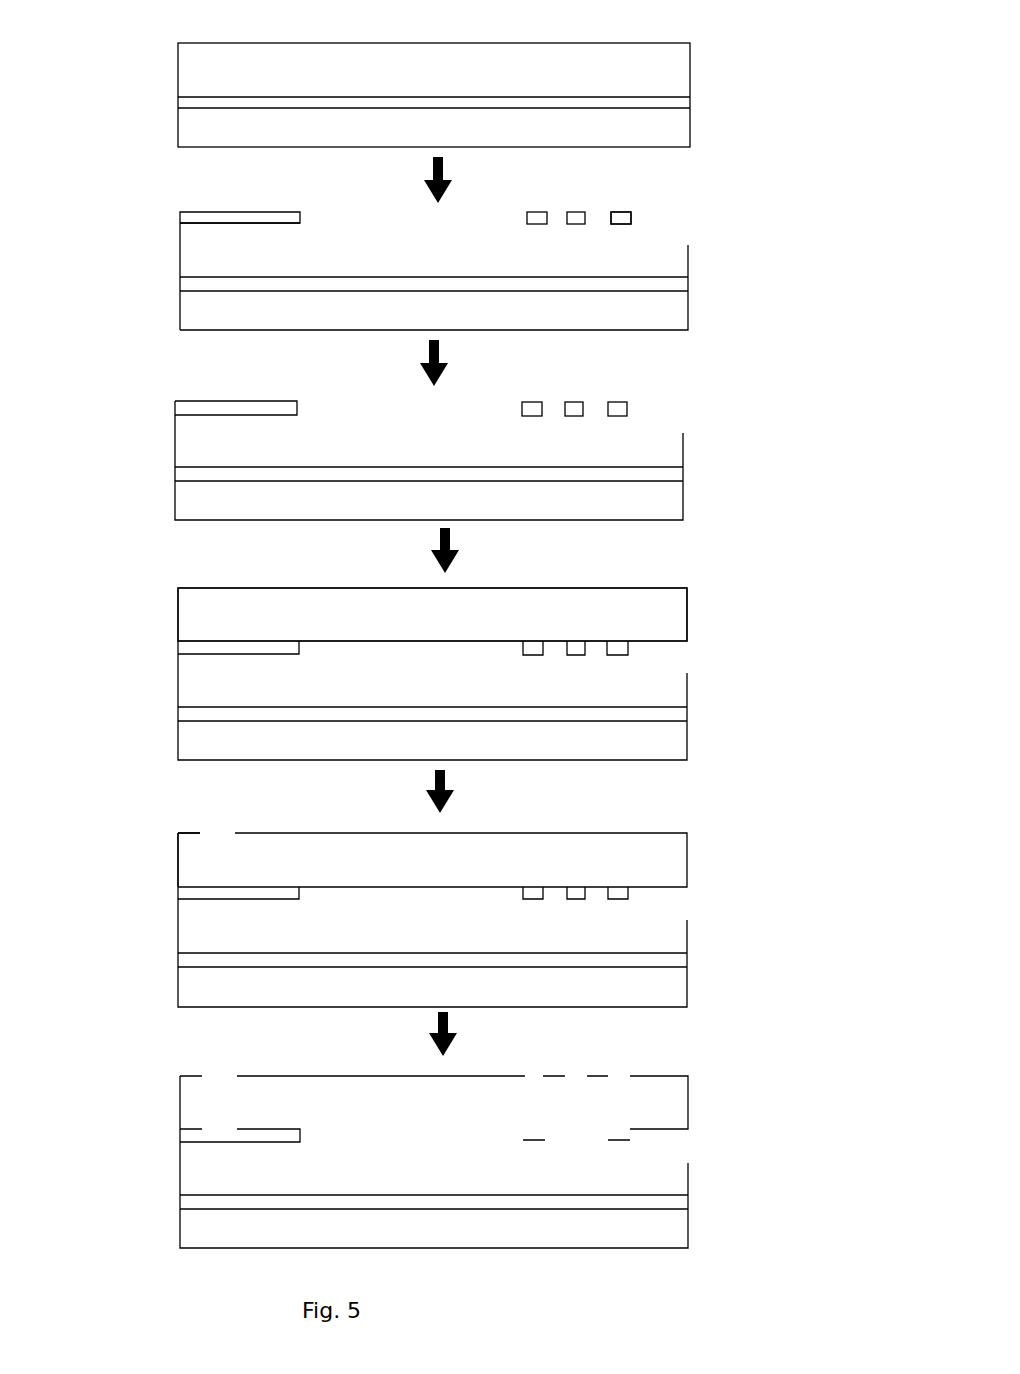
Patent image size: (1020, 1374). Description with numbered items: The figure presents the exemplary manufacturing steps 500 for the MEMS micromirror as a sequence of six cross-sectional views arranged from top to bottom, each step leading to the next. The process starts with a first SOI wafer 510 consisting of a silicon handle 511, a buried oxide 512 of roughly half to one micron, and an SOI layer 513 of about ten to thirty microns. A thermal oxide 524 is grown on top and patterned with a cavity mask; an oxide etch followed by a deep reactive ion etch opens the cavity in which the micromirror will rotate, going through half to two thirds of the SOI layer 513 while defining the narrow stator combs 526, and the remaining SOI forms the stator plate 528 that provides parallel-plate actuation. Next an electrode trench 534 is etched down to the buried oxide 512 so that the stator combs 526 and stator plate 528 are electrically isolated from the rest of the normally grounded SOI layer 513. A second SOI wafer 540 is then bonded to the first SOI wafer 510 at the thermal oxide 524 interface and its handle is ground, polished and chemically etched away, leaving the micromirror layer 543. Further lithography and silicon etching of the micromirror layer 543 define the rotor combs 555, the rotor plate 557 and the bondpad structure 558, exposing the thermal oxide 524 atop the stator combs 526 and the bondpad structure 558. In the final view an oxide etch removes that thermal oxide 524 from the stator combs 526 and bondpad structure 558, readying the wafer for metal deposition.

The manufacturing steps 500 is at (441, 626).
The first SOI wafer 510 is at (441, 95).
The silicon handle 511 is at (228, 135).
The buried oxide 512 is at (645, 103).
The SOI layer 513 is at (622, 75).
The thermal oxide 524 is at (210, 219).
The stator combs 526 is at (630, 237).
The stator plate 528 is at (460, 246).
The electrode trench 534 is at (360, 452).
The second SOI wafer 540 is at (441, 664).
The micromirror layer 543 is at (632, 615).
The rotor combs 555 is at (562, 845).
The rotor plate 557 is at (432, 893).
The bondpad structure 558 is at (200, 877).